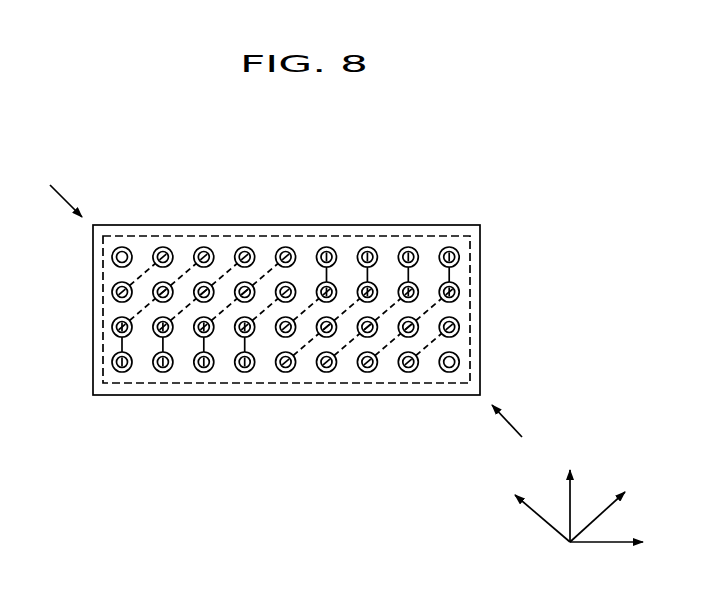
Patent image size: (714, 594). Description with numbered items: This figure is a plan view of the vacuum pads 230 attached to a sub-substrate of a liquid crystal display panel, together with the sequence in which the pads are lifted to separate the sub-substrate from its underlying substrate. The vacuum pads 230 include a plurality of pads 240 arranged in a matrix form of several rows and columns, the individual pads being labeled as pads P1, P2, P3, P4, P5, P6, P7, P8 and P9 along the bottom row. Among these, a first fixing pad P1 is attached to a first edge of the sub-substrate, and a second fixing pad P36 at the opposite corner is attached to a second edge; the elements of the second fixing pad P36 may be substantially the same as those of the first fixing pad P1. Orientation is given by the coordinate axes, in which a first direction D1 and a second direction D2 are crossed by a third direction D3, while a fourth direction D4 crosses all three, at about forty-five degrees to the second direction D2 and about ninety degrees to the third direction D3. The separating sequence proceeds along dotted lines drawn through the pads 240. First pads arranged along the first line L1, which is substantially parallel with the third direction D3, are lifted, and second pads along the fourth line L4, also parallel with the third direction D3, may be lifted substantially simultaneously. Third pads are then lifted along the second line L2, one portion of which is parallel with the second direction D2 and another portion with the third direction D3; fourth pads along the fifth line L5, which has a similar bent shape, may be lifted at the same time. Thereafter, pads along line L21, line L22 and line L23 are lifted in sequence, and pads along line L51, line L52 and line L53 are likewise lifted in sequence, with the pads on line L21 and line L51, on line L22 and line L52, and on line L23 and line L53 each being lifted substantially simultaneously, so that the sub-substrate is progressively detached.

The vacuum pads 230 is at (470, 307).
The pads 240 is at (453, 362).
The first fixing pad P1 is at (449, 372).
The pad P2 is at (408, 372).
The pad P3 is at (367, 372).
The pad P4 is at (326, 372).
The pad P5 is at (286, 372).
The pad P6 is at (245, 372).
The pad P7 is at (204, 372).
The pad P8 is at (163, 372).
The pad P9 is at (122, 372).
The second fixing pad P36 is at (113, 257).
The first line L1 is at (441, 347).
The second line L2 is at (450, 272).
The fourth line L4 is at (156, 263).
The fifth line L5 is at (114, 321).
The line L21 is at (408, 277).
The line L22 is at (367, 277).
The line L23 is at (326, 277).
The line L51 is at (223, 274).
The line L52 is at (264, 275).
The line L53 is at (270, 305).
The first direction D1 is at (621, 542).
The second direction D2 is at (570, 493).
The third direction D3 is at (612, 510).
The fourth direction D4 is at (527, 510).